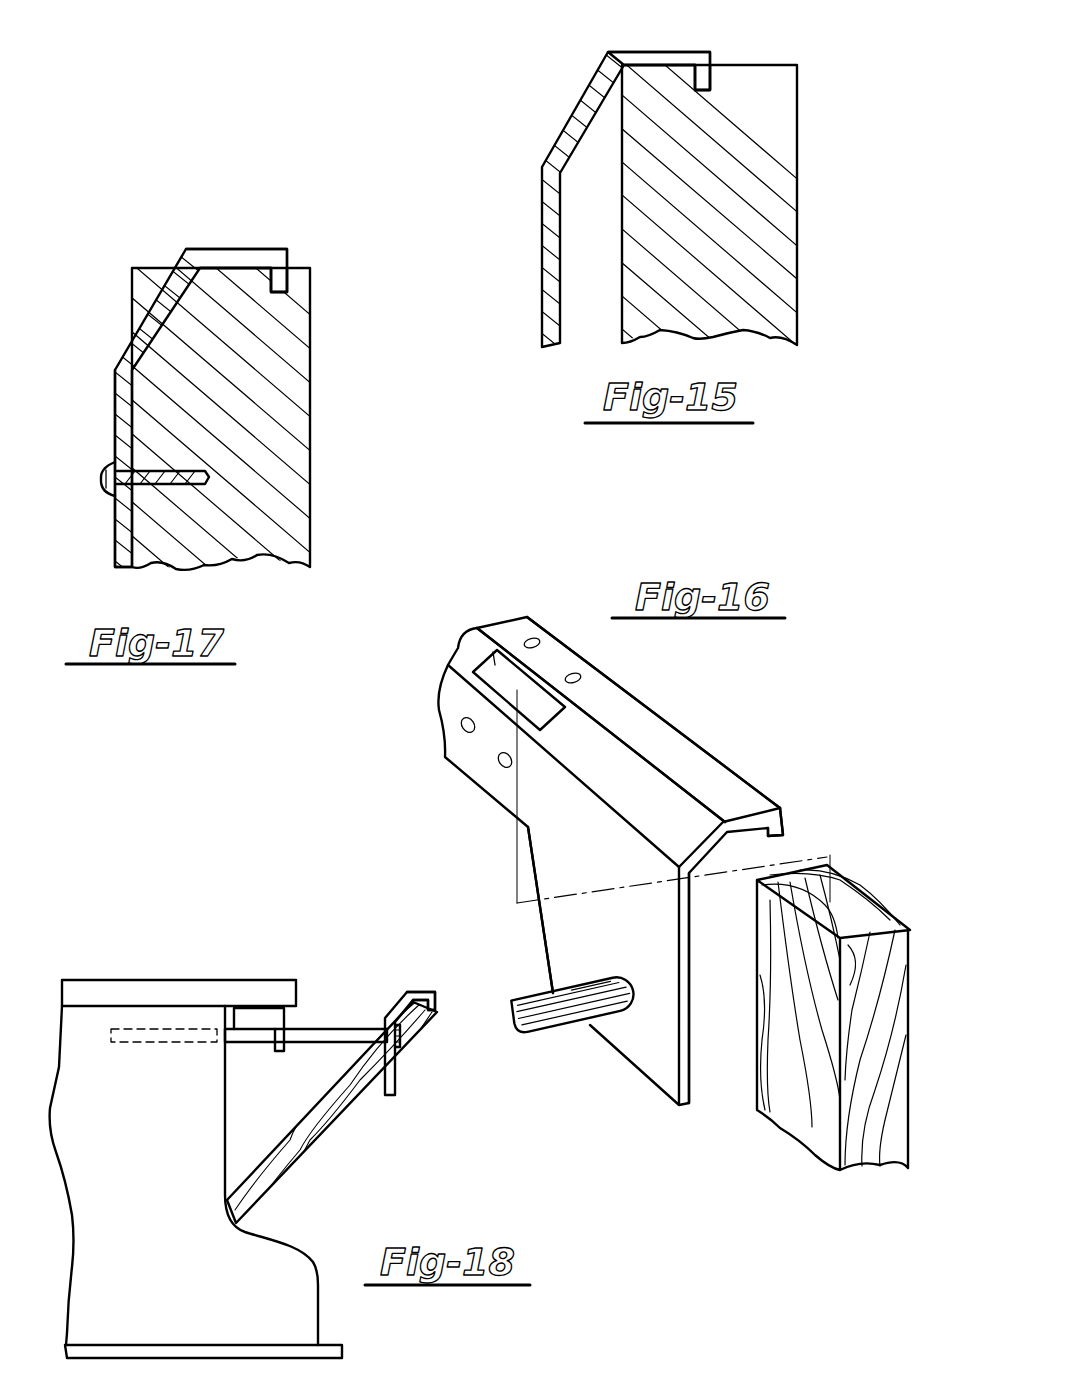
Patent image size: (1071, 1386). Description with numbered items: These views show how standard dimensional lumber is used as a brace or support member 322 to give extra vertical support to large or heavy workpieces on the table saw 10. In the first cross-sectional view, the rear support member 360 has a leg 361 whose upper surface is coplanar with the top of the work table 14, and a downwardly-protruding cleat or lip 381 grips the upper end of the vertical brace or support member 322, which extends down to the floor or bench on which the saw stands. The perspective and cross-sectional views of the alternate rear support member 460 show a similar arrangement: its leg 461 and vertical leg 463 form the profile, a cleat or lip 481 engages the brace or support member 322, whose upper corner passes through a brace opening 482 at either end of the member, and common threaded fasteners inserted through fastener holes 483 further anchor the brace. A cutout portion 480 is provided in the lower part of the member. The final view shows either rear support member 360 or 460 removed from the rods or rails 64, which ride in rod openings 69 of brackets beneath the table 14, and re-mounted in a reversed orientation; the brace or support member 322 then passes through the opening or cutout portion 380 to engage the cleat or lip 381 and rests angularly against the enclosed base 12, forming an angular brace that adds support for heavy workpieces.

In FIG. 18, the table saw 10 is at (108, 960).
In FIG. 18, the enclosed base 12 is at (296, 1305).
In FIG. 18, the work table 14 is at (118, 999).
In FIG. 18, the rods or rails 64 is at (314, 1038).
In FIG. 18, the rod openings 69 is at (294, 1023).
In FIG. 15, the brace or support member 322 is at (773, 118).
In FIG. 17, the brace or support member 322 is at (305, 504).
In FIG. 16, the brace or support member 322 is at (808, 1125).
In FIG. 18, the brace or support member 322 is at (307, 1146).
In FIG. 15, the rear support member 360 is at (565, 108).
In FIG. 18, the rear support member 360 is at (397, 1085).
In FIG. 15, the leg 361 is at (655, 52).
In FIG. 18, the leg 361 is at (430, 965).
In FIG. 18, the opening or cutout portion 380 is at (398, 1060).
In FIG. 15, the cleat or lip 381 is at (713, 65).
In FIG. 18, the cleat or lip 381 is at (436, 1008).
In FIG. 17, the alternate rear support member 460 is at (103, 371).
In FIG. 16, the alternate rear support member 460 is at (540, 796).
In FIG. 17, the leg of alternate rear support member 461 is at (240, 260).
In FIG. 16, the leg of alternate rear support member 461 is at (698, 773).
In FIG. 17, the vertical leg of alternate rear support member 463 is at (114, 415).
In FIG. 16, the opening or cutout portion 480 is at (510, 812).
In FIG. 17, the cleat or lip 481 is at (288, 262).
In FIG. 16, the cleat or lip 481 is at (785, 833).
In FIG. 16, the brace openings 482 is at (494, 655).
In FIG. 17, the fastener holes 483 is at (117, 462).